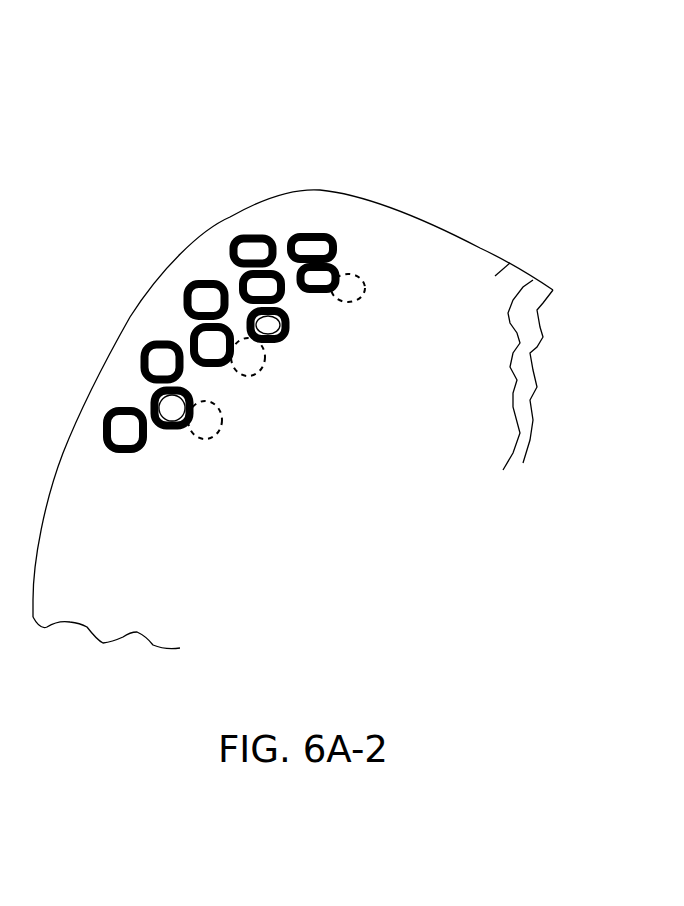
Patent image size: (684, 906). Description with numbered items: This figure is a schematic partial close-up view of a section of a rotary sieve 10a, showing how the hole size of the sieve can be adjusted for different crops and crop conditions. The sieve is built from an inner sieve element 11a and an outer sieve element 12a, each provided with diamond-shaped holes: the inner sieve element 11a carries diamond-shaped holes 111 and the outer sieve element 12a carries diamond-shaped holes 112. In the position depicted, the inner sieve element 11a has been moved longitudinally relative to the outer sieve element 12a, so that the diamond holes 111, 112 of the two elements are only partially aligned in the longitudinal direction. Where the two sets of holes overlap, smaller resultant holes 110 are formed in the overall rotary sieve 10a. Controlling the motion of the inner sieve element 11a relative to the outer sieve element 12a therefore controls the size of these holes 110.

The rotary sieve 10a is at (366, 170).
The outer sieve element 12a is at (500, 273).
The inner sieve element 11a is at (527, 350).
The holes 110 is at (277, 330).
The diamond-shaped holes 111 is at (365, 290).
The diamond-shaped holes 112 is at (277, 333).